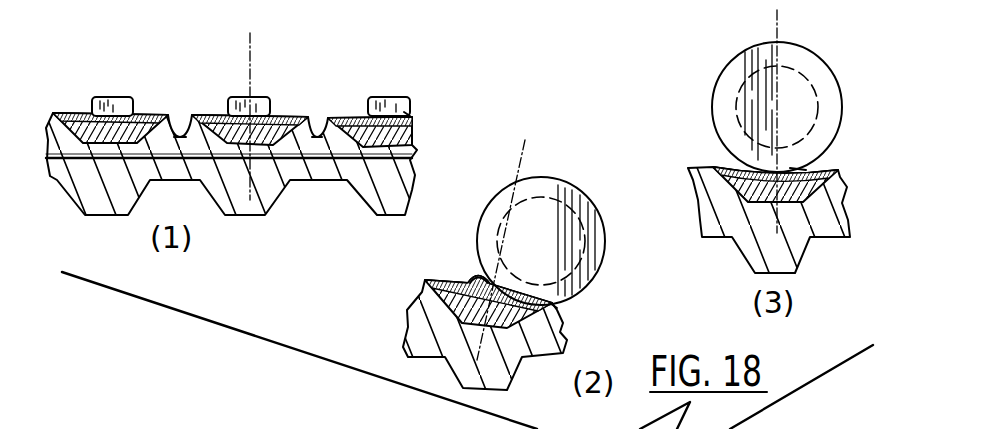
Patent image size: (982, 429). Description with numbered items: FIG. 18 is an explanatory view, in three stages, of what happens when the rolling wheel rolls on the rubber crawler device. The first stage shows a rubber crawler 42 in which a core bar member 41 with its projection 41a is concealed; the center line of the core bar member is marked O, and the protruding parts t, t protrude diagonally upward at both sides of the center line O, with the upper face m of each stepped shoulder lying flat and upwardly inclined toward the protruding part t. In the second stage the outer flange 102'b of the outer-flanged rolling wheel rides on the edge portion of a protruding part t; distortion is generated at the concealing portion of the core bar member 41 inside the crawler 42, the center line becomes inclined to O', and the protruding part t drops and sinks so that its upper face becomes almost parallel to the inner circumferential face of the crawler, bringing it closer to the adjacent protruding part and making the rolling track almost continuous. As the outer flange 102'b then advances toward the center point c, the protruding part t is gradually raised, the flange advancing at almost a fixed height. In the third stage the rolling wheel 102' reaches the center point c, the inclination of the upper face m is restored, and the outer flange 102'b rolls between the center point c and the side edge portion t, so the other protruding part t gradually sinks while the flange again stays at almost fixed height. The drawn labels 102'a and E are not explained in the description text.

The center line of the core bar member O is at (513, 121).
The inclined center line O' is at (510, 232).
The core bar member 41 is at (373, 78).
The projection of the core bar member 41a is at (262, 96).
The rubber crawler 42 is at (400, 170).
The rolling wheel 102' is at (799, 98).
The roller core 102'a is at (550, 215).
The outer flange of the rolling wheel 102'b is at (564, 241).
The center point of the upper face c is at (479, 283).
The end portion E is at (556, 306).
The upper face of the stepped shoulder m is at (403, 114).
The protruding part t is at (198, 114).